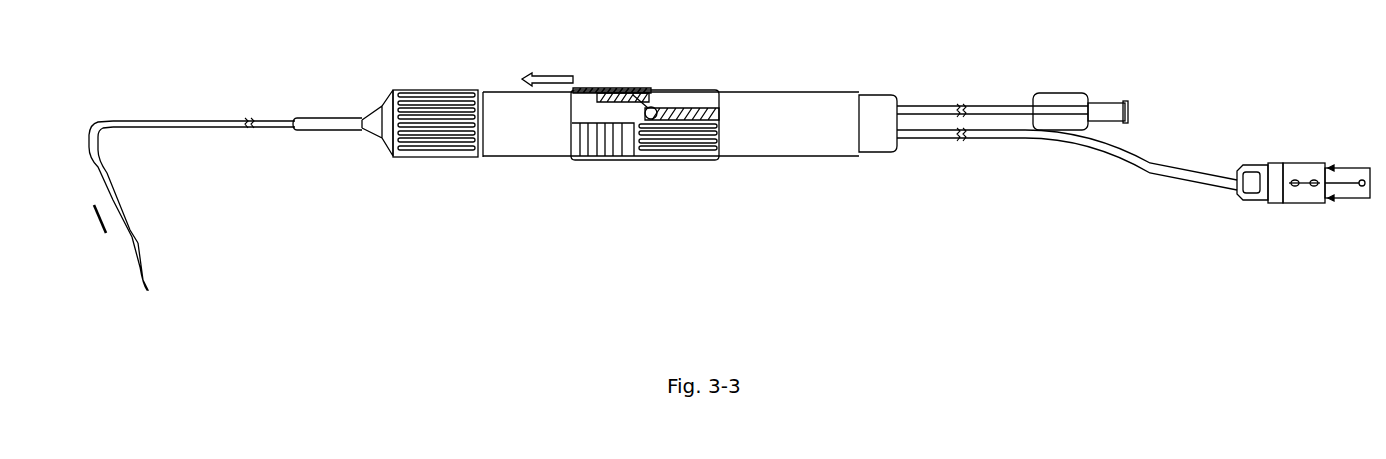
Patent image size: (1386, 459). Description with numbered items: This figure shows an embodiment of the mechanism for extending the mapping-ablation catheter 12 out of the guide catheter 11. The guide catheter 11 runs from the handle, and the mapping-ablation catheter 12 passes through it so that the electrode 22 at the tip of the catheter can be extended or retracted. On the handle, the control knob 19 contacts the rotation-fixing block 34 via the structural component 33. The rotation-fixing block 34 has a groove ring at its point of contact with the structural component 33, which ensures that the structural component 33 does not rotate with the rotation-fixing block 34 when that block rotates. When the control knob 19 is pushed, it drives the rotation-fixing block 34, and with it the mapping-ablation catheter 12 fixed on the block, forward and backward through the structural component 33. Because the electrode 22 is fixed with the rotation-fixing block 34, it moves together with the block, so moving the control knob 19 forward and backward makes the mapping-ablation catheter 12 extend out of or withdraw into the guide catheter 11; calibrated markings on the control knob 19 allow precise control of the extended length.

The guide catheter 11 is at (207, 119).
The mapping-ablation catheter 12 is at (133, 235).
The electrode 22 is at (155, 282).
The control knob 19 is at (588, 156).
The structural component 33 is at (633, 95).
The rotation-fixing block 34 is at (673, 110).